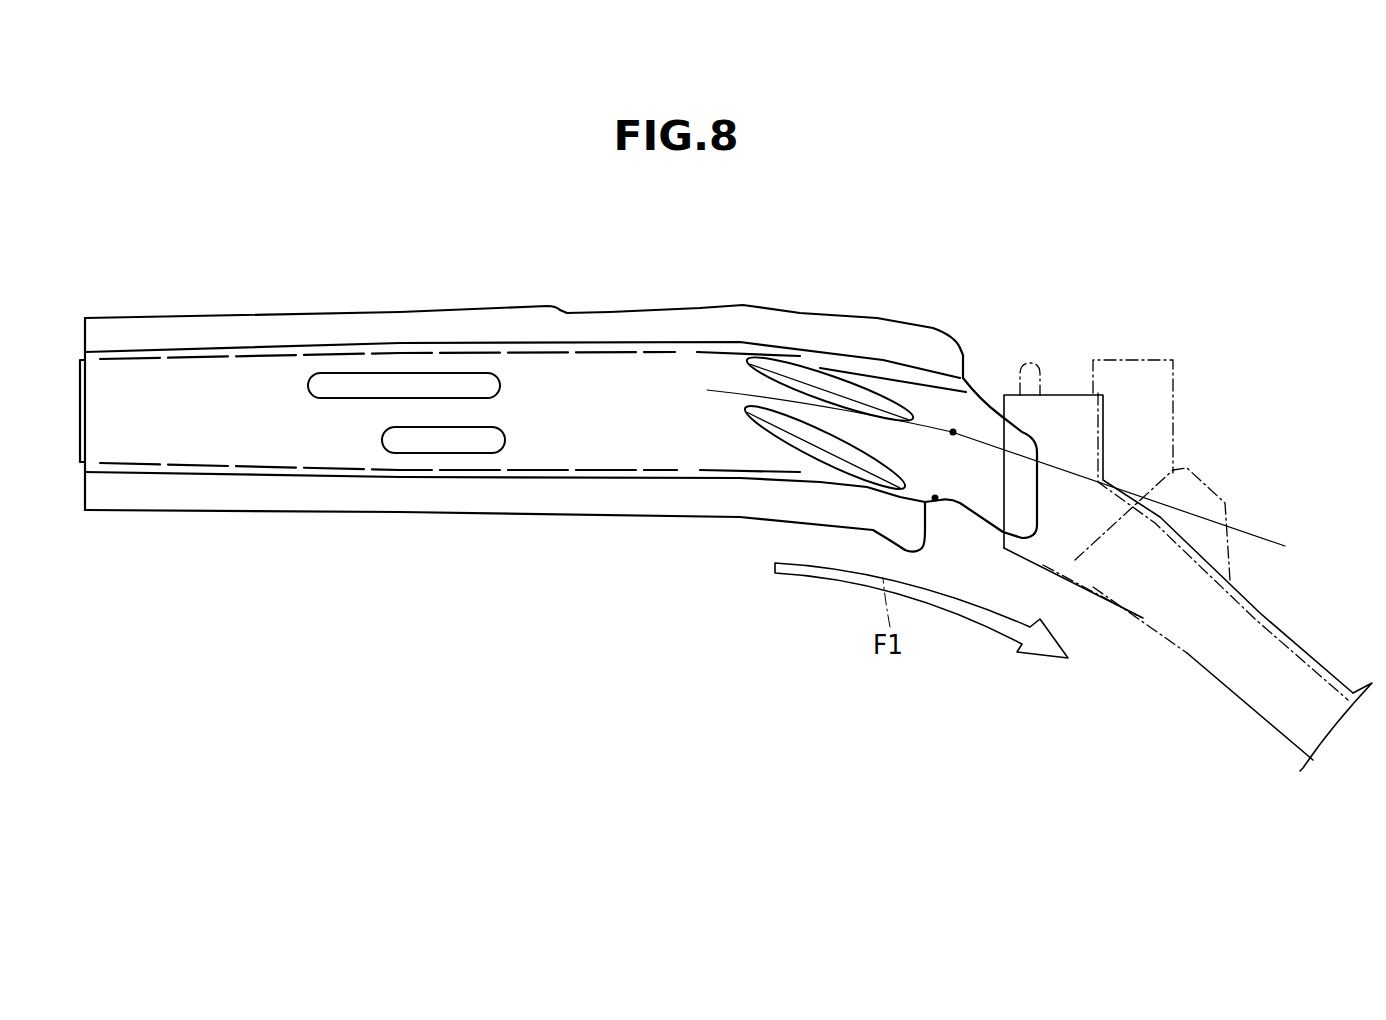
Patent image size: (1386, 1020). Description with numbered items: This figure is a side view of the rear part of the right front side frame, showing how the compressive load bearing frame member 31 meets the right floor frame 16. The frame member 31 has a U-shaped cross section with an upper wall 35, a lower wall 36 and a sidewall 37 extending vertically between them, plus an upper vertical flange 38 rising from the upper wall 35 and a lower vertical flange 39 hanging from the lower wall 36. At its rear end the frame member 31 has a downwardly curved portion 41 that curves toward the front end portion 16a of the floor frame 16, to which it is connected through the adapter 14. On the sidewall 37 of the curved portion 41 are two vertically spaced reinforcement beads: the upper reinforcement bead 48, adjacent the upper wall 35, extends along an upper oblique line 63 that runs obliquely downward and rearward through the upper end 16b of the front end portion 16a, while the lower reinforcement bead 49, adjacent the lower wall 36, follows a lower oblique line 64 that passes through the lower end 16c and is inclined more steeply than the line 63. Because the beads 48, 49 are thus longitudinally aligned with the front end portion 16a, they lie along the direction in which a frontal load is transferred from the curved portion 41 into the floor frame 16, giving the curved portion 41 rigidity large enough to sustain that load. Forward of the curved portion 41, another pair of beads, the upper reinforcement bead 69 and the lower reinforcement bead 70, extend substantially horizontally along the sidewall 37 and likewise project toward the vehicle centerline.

The adapter 14 is at (1173, 398).
The floor frame 16 is at (1225, 670).
The front end portion of floor frame 16a is at (1153, 577).
The upper end of front end portion 16b is at (1130, 522).
The lower end of front end portion 16c is at (1092, 563).
The compressive load bearing frame member 31 is at (475, 308).
The upper wall 35 is at (647, 350).
The lower wall 36 is at (627, 472).
The sidewall 37 is at (553, 413).
The upper vertical flange 38 is at (238, 332).
The lower vertical flange 39 is at (238, 497).
The downwardly curved portion 41 is at (735, 443).
The upper reinforcement bead 48 is at (818, 378).
The lower reinforcement bead 49 is at (852, 453).
The upper oblique line 63 is at (953, 432).
The lower oblique line 64 is at (935, 498).
The upper reinforcement bead 69 is at (368, 387).
The lower reinforcement bead 70 is at (430, 442).